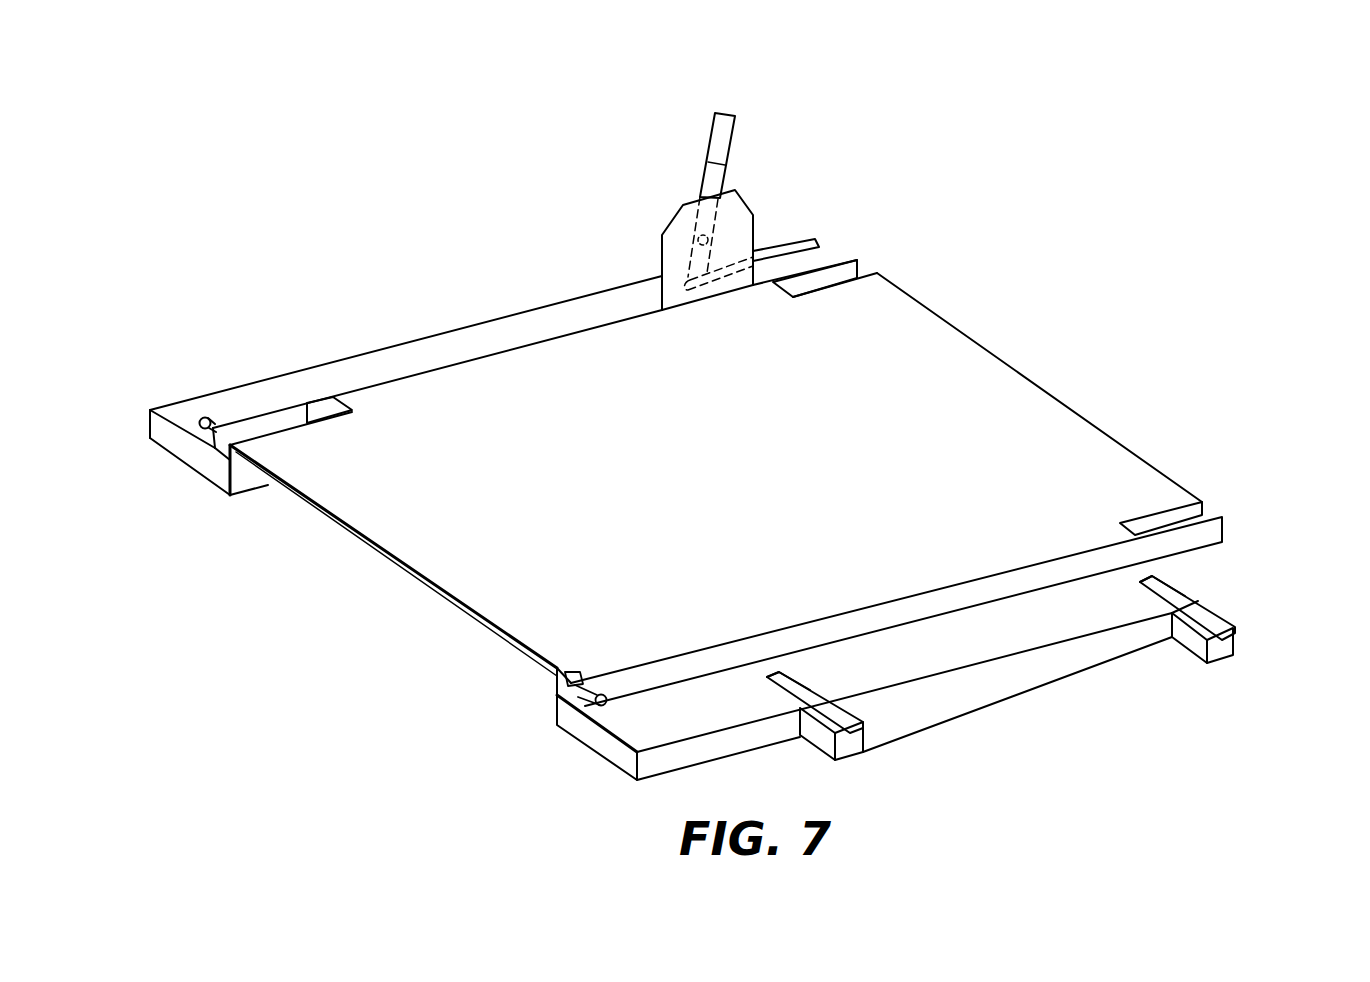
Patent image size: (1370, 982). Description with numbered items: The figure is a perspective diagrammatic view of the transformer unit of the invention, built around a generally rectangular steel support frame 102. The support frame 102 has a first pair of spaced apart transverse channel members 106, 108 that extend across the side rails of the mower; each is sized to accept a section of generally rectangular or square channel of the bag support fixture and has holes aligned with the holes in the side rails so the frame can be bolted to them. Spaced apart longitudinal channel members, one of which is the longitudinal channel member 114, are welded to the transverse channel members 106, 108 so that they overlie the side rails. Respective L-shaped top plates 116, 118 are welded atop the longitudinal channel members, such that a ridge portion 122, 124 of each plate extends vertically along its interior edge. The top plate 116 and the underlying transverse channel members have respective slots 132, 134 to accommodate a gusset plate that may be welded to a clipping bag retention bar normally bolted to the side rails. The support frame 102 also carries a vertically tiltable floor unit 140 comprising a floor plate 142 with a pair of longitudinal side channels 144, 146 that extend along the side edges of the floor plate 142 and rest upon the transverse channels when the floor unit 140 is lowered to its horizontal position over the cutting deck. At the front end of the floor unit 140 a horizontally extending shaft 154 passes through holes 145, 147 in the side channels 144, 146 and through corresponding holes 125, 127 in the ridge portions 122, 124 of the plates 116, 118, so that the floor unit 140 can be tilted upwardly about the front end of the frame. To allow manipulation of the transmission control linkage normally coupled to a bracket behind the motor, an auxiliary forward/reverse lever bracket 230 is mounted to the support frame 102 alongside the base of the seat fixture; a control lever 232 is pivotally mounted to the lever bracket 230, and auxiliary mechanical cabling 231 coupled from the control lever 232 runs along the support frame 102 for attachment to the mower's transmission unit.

The support frame 102 is at (1180, 582).
The transverse channel member 106 is at (868, 736).
The transverse channel member 108 is at (1238, 643).
The longitudinal channel member 114 is at (218, 488).
The L-shaped top plate 116 is at (590, 738).
The L-shaped top plate 118 is at (172, 406).
The ridge portion 122 is at (905, 616).
The ridge portion 124 is at (200, 442).
The hole 125 is at (592, 694).
The hole 127 is at (223, 423).
The slot 132 is at (778, 681).
The slot 134 is at (835, 701).
The floor unit 140 is at (932, 316).
The floor plate 142 is at (448, 588).
The longitudinal side channel 144 is at (683, 654).
The hole 145 is at (556, 681).
The longitudinal side channel 146 is at (305, 417).
The hole 147 is at (237, 456).
The shaft 154 is at (395, 558).
The auxiliary forward/reverse lever bracket 230 is at (737, 190).
The auxiliary mechanical cabling 231 is at (788, 242).
The control lever 232 is at (702, 142).